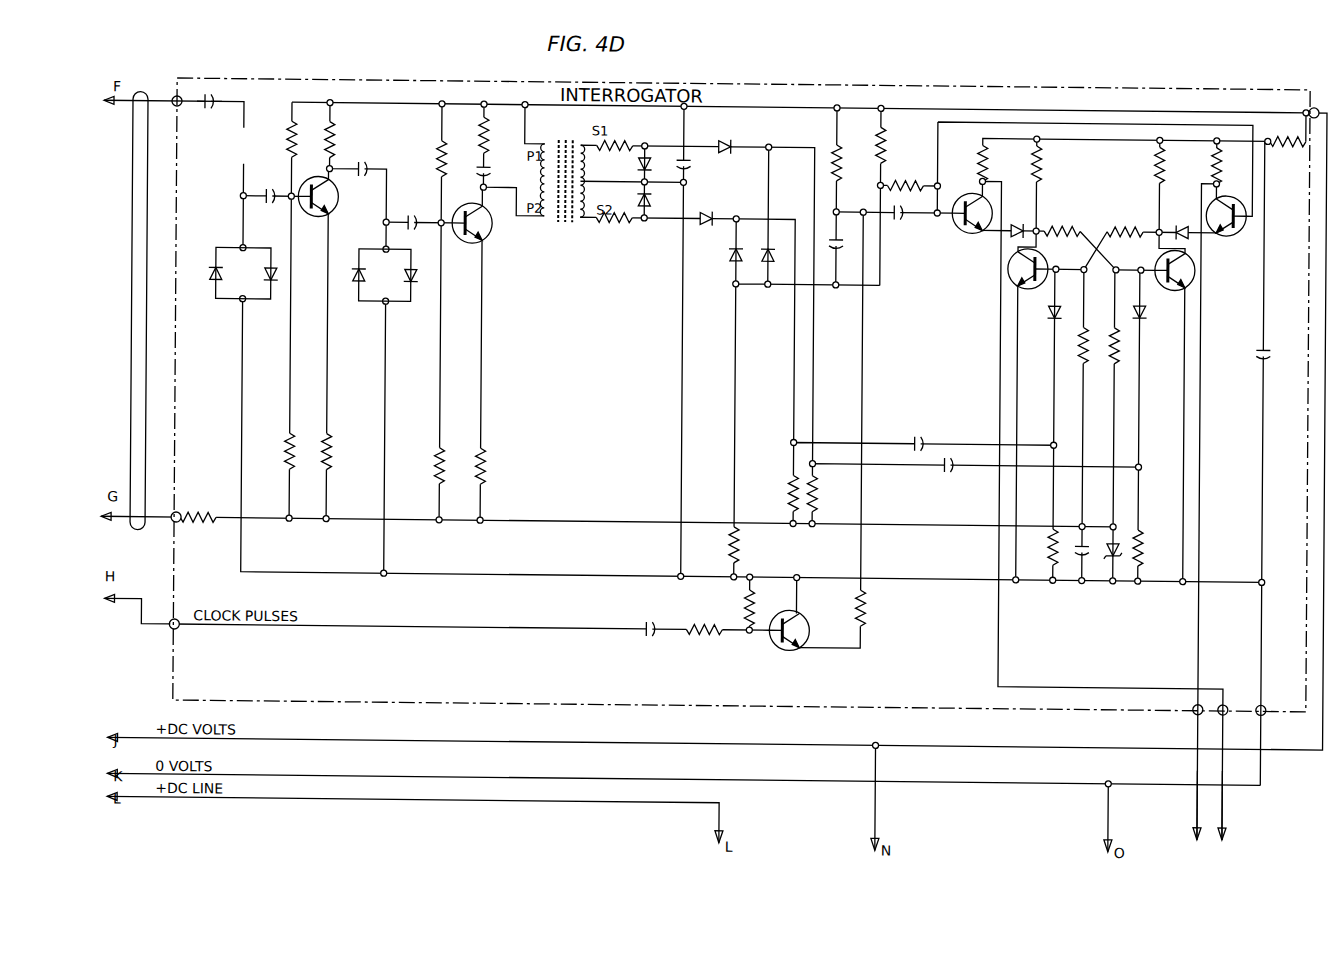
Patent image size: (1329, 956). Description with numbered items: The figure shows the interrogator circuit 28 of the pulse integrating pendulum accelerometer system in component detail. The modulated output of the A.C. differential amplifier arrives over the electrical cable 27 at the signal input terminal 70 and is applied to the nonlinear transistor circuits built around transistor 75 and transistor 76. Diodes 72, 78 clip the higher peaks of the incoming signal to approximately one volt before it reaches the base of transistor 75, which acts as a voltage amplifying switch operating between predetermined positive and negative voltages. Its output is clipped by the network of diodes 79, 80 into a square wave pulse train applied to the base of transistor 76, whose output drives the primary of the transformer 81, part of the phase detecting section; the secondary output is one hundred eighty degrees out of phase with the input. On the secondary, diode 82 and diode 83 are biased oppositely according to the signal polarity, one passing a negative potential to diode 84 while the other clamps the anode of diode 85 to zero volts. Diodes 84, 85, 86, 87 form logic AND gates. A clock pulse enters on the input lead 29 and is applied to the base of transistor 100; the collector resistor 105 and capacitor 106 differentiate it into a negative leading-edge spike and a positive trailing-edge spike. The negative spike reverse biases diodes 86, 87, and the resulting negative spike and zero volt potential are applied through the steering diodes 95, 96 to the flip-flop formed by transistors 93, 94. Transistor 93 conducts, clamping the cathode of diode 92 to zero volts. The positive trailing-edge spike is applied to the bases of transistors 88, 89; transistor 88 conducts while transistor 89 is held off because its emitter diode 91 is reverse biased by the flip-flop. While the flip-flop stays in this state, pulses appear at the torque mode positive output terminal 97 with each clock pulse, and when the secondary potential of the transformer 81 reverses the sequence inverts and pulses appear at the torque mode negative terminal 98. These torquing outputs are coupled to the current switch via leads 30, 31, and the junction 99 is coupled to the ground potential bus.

The electrical cable 27 is at (133, 248).
The interrogator circuit 28 is at (666, 80).
The input lead 29 is at (131, 598).
The lead 30 is at (1229, 798).
The lead 31 is at (1200, 798).
The signal input terminal 70 is at (174, 97).
The diode 72 is at (217, 262).
The transistor 75 is at (337, 197).
The transistor 76 is at (488, 233).
The diode 78 is at (272, 262).
The diode 79 is at (360, 262).
The diode 80 is at (412, 262).
The transformer 81 is at (566, 222).
The diode 82 is at (649, 152).
The diode 83 is at (650, 206).
The diode 84 is at (726, 142).
The diode 85 is at (708, 222).
The diode 86 is at (734, 260).
The diode 87 is at (767, 260).
The transistor 88 is at (966, 190).
The transistor 89 is at (1229, 190).
The emitter diode 91 is at (1182, 214).
The diode 92 is at (1016, 215).
The transistor 93 is at (1012, 260).
The transistor 94 is at (1193, 260).
The steering diode 95 is at (1052, 313).
The steering diode 96 is at (1147, 312).
The torque mode positive output terminal 97 is at (1229, 705).
The torque mode negative terminal 98 is at (1198, 704).
The junction 99 is at (1268, 705).
The transistor 100 is at (785, 642).
The collector resistor 105 is at (868, 601).
The capacitor 106 is at (839, 241).